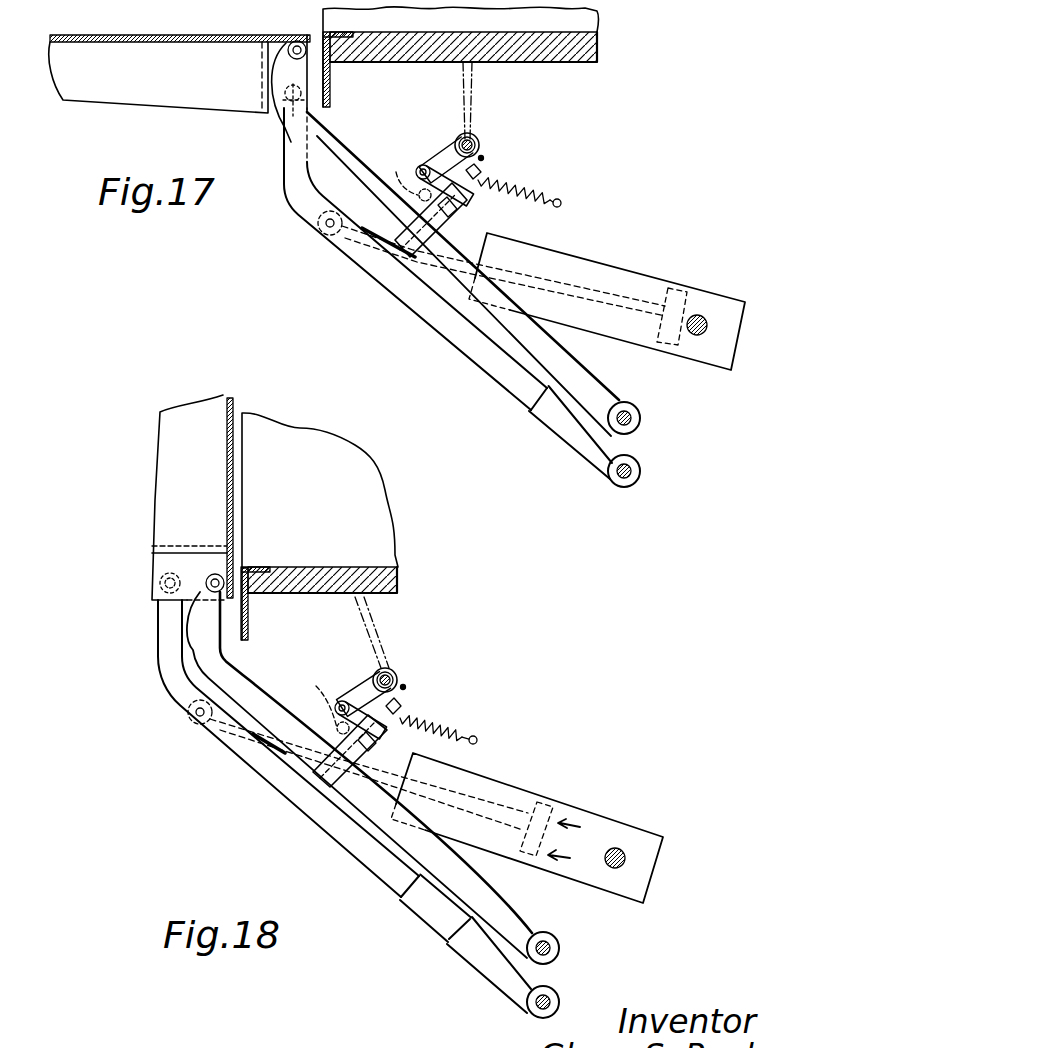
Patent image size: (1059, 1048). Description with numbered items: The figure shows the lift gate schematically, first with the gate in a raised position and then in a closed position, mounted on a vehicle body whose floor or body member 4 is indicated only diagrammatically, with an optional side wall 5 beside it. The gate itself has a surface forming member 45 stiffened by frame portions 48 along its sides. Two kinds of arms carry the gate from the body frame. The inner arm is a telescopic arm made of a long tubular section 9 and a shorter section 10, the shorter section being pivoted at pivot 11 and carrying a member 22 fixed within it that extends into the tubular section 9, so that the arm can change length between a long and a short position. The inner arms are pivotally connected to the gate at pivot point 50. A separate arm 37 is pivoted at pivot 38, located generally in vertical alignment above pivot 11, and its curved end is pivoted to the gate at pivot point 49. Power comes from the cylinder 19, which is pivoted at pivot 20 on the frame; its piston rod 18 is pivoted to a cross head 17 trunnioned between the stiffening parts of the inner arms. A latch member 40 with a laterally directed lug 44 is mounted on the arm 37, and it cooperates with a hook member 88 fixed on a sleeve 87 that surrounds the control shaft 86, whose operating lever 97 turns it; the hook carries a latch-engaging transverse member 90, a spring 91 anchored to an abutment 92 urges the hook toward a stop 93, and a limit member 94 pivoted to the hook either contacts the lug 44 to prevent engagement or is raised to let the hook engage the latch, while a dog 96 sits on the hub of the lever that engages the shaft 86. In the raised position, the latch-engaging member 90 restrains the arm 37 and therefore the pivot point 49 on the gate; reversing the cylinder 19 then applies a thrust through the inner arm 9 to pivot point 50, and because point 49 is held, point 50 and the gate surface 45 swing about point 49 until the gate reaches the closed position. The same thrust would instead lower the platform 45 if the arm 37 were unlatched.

In FIG. 17, the floor or body member 4 is at (594, 53).
In FIG. 18, the floor or body member 4 is at (380, 563).
In FIG. 17, the side wall 5 is at (591, 22).
In FIG. 18, the side wall 5 is at (355, 463).
In FIG. 17, the inner arm long section 9 is at (452, 338).
In FIG. 18, the inner arm long section 9 is at (272, 785).
In FIG. 17, the inner arm shorter section 10 is at (566, 434).
In FIG. 18, the inner arm shorter section 10 is at (473, 948).
In FIG. 17, the pivot 11 is at (641, 471).
In FIG. 18, the pivot 11 is at (558, 1002).
In FIG. 17, the cross head 17 is at (324, 240).
In FIG. 18, the cross head 17 is at (190, 718).
In FIG. 17, the piston rod 18 is at (537, 273).
In FIG. 18, the piston rod 18 is at (268, 745).
In FIG. 17, the cylinder 19 is at (600, 260).
In FIG. 18, the cylinder 19 is at (508, 788).
In FIG. 17, the cylinder pivot 20 is at (703, 316).
In FIG. 18, the cylinder pivot 20 is at (622, 848).
In FIG. 18, the telescoping member 22 is at (423, 910).
In FIG. 17, the arm 37 is at (596, 374).
In FIG. 18, the arm 37 is at (503, 902).
In FIG. 17, the pivot of arms 37 38 is at (641, 417).
In FIG. 18, the pivot of arms 37 38 is at (557, 946).
In FIG. 17, the latch member 40 is at (441, 223).
In FIG. 18, the latch member 40 is at (330, 718).
In FIG. 17, the lug 44 is at (456, 207).
In FIG. 18, the lug 44 is at (366, 741).
In FIG. 17, the surface forming member 45 is at (152, 26).
In FIG. 18, the surface forming member 45 is at (225, 451).
In FIG. 17, the frame portion 48 is at (116, 97).
In FIG. 18, the frame portion 48 is at (157, 497).
In FIG. 17, the gate pivot for arms 37 49 is at (298, 41).
In FIG. 18, the gate pivot for arms 37 49 is at (215, 573).
In FIG. 17, the gate pivot for arms 9 50 is at (274, 115).
In FIG. 18, the gate pivot for arms 9 50 is at (160, 585).
In FIG. 17, the control shaft 86 is at (473, 136).
In FIG. 18, the control shaft 86 is at (390, 672).
In FIG. 17, the sleeve 87 is at (480, 142).
In FIG. 18, the sleeve 87 is at (397, 676).
In FIG. 17, the hook member 88 is at (449, 156).
In FIG. 18, the hook member 88 is at (358, 693).
In FIG. 17, the latch-engaging transverse member 90 is at (403, 179).
In FIG. 18, the latch-engaging transverse member 90 is at (321, 703).
In FIG. 17, the spring 91 is at (522, 195).
In FIG. 18, the spring 91 is at (428, 723).
In FIG. 17, the abutment 92 is at (562, 200).
In FIG. 18, the abutment 92 is at (478, 740).
In FIG. 17, the stop 93 is at (481, 171).
In FIG. 18, the stop 93 is at (401, 706).
In FIG. 17, the limit member 94 is at (468, 199).
In FIG. 18, the limit member 94 is at (384, 737).
In FIG. 17, the dog 96 is at (485, 157).
In FIG. 18, the dog 96 is at (407, 688).
In FIG. 17, the operating or control lever 97 is at (474, 75).
In FIG. 18, the operating or control lever 97 is at (372, 622).